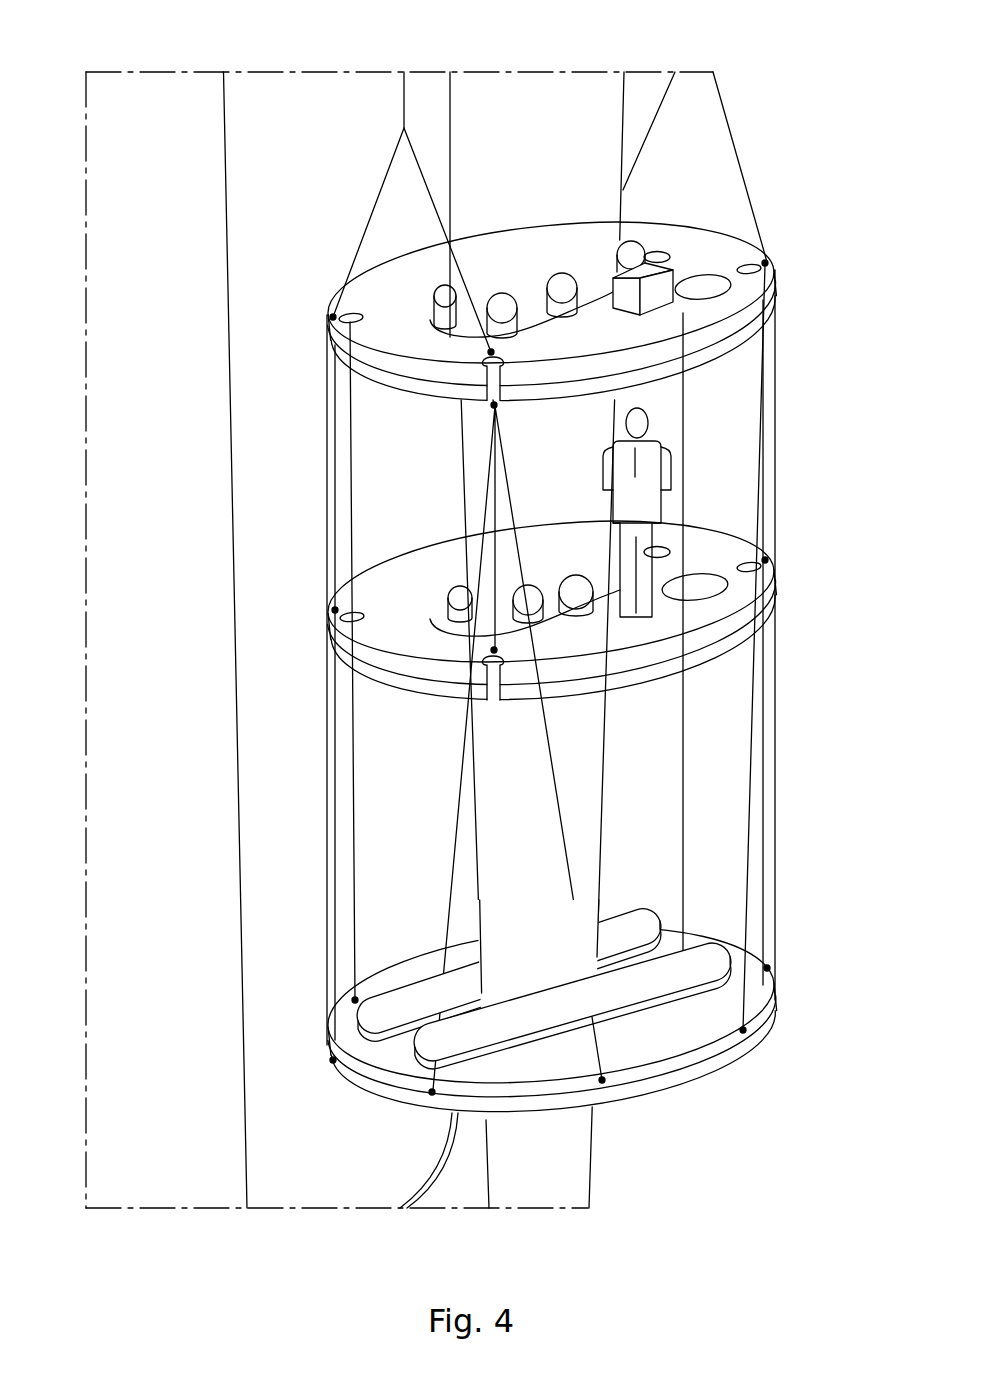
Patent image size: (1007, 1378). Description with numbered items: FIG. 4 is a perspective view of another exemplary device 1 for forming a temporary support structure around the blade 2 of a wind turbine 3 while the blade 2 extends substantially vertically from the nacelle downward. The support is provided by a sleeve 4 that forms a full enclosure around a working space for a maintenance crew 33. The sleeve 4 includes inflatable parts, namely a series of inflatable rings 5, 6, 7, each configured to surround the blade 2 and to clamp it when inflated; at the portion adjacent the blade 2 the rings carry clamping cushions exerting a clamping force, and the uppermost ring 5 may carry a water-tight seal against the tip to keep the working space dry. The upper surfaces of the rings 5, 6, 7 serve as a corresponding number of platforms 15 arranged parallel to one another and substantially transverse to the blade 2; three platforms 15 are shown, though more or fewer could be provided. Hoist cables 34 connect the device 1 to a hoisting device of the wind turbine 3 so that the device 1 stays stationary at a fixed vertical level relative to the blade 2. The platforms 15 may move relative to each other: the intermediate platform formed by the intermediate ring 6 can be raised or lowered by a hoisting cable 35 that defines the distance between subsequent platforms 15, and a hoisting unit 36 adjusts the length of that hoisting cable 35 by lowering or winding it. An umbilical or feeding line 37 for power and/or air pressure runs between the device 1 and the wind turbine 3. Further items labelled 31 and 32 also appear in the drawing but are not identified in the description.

The device 1 is at (307, 160).
The blade 2 is at (563, 1153).
The wind turbine 3 is at (122, 1125).
The sleeve 4 is at (778, 884).
The uppermost inflatable ring 5 is at (292, 306).
The intermediate inflatable ring 6 is at (449, 760).
The inflatable ring 7 is at (297, 1021).
The platforms 15 is at (715, 548).
The containers 31 is at (600, 618).
The mast 32 is at (574, 254).
The maintenance crew 33 is at (648, 483).
The hoist cables 34 is at (740, 167).
The hoisting cable 35 is at (683, 788).
The hoisting unit 36 is at (660, 293).
The umbilical or feeding line 37 is at (427, 1163).